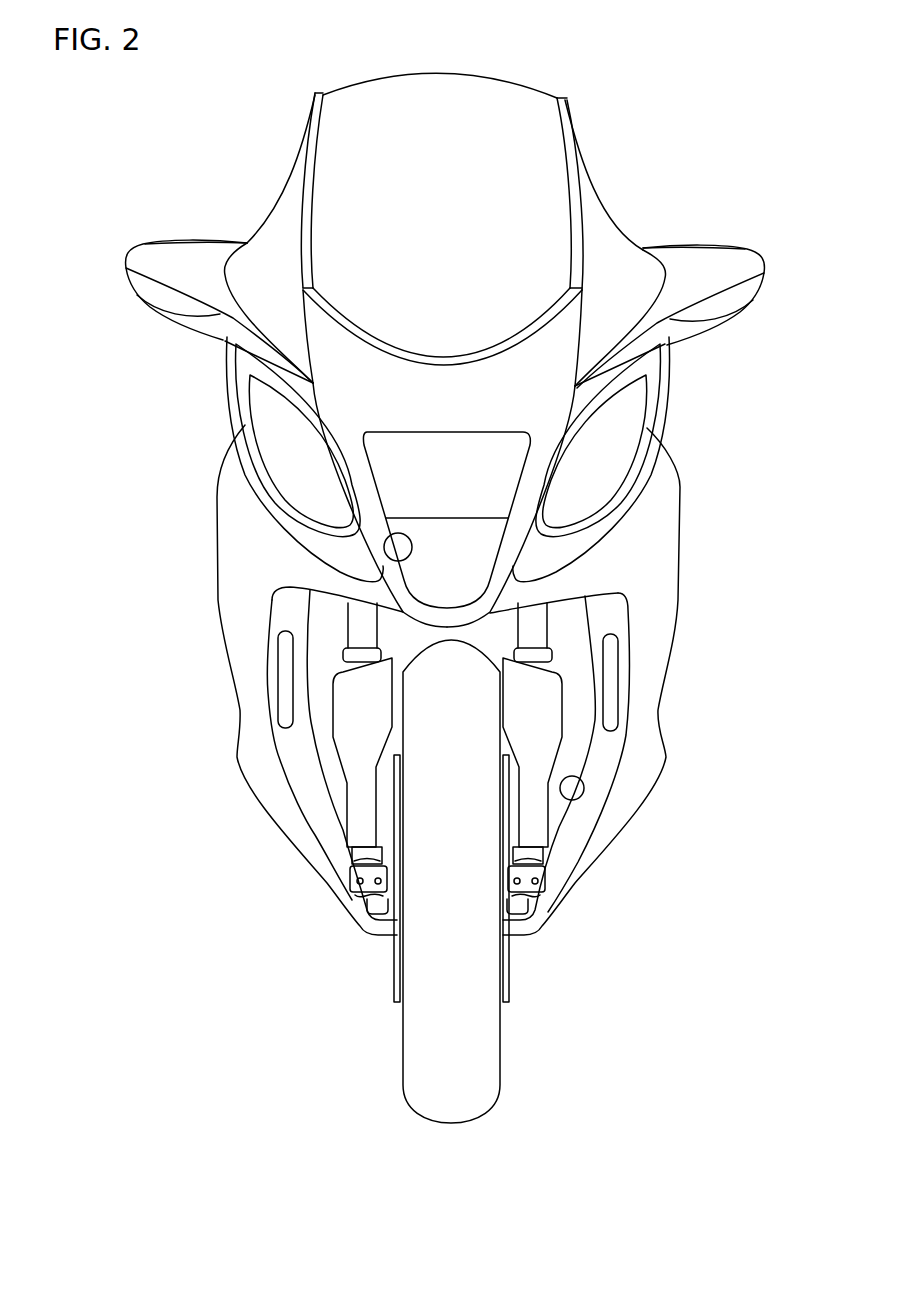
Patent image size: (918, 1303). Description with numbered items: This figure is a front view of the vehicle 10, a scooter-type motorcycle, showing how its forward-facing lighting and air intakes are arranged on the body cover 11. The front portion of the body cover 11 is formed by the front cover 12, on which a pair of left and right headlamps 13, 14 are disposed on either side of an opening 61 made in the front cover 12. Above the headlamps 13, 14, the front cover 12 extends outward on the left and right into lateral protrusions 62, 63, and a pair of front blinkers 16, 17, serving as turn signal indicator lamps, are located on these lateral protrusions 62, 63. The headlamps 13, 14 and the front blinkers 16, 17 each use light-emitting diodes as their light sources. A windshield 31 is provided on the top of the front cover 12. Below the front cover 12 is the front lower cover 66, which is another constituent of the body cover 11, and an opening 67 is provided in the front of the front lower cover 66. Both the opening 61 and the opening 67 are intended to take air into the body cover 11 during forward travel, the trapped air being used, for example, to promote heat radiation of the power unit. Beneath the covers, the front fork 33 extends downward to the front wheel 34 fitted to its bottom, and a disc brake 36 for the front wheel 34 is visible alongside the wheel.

The vehicle 10 is at (166, 136).
The body cover 11 is at (688, 527).
The front cover 12 is at (520, 368).
The headlamp 13 is at (593, 453).
The headlamp 14 is at (283, 458).
The front blinker 16 is at (745, 293).
The front blinker 17 is at (147, 290).
The windshield 31 is at (497, 98).
The front fork 33 is at (355, 743).
The front wheel 34 is at (418, 1067).
The disc brake 36 is at (392, 965).
The opening 61 is at (395, 560).
The lateral protrusion 62 is at (697, 255).
The lateral protrusion 63 is at (190, 255).
The front lower cover 66 is at (655, 583).
The opening 67 is at (577, 803).